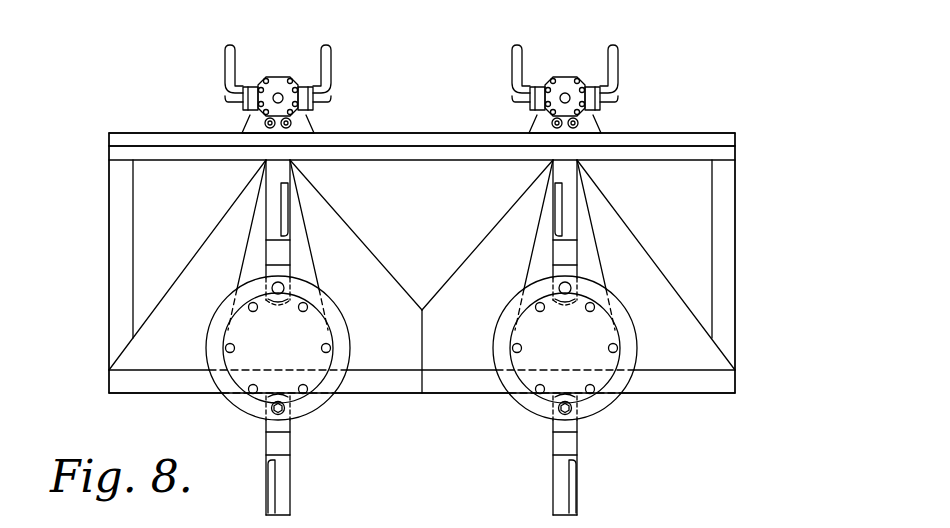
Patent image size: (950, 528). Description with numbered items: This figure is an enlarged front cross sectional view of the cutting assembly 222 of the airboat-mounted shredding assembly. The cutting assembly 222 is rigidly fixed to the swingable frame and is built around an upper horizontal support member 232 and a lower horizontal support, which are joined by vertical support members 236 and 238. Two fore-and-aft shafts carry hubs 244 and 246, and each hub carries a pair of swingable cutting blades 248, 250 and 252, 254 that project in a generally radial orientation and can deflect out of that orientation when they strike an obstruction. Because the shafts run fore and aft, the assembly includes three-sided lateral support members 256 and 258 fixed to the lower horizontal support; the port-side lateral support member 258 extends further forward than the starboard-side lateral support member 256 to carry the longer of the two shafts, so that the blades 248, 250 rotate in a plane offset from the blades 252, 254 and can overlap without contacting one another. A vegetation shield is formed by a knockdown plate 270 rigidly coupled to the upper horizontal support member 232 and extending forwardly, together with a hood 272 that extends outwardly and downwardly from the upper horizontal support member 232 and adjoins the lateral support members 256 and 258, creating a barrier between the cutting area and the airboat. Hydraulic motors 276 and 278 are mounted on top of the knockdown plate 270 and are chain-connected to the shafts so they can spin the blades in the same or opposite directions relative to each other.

The cutting assembly 222 is at (424, 62).
The upper horizontal support member 232 is at (712, 152).
The vertical support member 236 is at (121, 243).
The vertical support member 238 is at (724, 281).
The hub 244 is at (310, 375).
The hub 246 is at (597, 380).
The swingable cutting blade 248 is at (281, 486).
The swingable cutting blade 250 is at (276, 208).
The swingable cutting blade 252 is at (563, 494).
The swingable cutting blade 254 is at (570, 208).
The lateral support member 256 is at (166, 380).
The lateral support member 258 is at (440, 383).
The knockdown plate 270 is at (725, 140).
The hood 272 is at (405, 207).
The hydraulic motor 276 is at (278, 86).
The hydraulic motor 278 is at (565, 86).